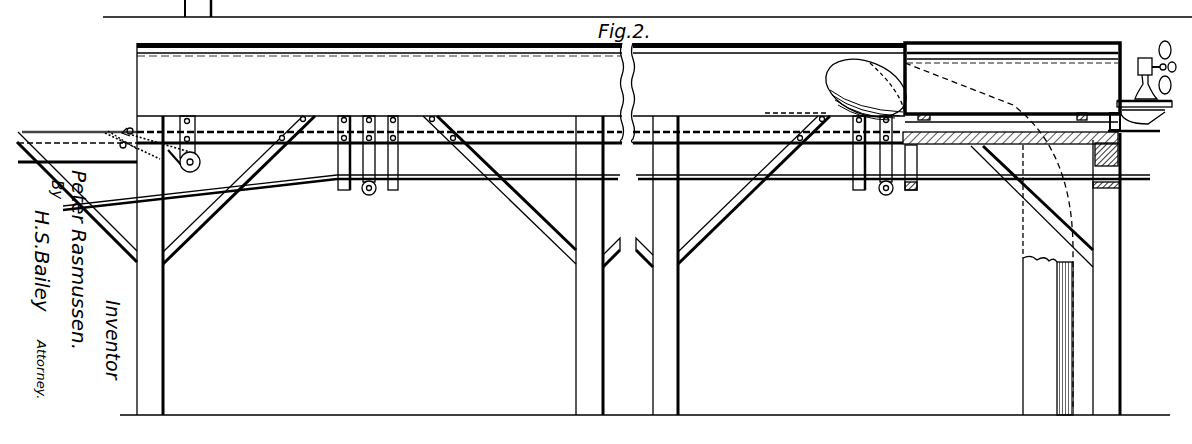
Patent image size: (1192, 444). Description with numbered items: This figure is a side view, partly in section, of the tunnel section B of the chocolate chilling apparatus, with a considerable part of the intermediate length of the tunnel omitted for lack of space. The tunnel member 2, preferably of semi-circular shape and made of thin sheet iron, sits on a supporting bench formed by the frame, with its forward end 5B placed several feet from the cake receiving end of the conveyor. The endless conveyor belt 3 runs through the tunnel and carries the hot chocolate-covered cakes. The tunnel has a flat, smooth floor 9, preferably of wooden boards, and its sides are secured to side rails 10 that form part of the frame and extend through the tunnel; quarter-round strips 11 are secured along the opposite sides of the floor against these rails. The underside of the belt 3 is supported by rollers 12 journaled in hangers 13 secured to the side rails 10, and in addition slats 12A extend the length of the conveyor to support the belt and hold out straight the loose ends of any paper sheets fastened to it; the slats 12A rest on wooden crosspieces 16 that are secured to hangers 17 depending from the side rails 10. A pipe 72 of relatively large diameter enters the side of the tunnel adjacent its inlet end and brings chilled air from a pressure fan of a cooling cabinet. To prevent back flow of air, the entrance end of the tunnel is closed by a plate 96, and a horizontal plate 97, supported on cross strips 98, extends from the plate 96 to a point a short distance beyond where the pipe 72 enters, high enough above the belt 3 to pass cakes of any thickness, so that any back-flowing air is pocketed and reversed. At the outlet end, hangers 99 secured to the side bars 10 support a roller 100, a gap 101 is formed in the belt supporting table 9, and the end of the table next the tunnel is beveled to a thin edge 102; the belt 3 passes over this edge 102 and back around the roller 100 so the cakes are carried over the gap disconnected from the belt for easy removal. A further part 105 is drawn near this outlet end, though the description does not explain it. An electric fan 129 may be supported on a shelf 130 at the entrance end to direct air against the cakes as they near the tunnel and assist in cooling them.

The tunnel member 2 is at (521, 93).
The endless conveyor belt 3 is at (45, 132).
The forward end of the chilling tunnel 5B is at (1118, 44).
The floor 9 is at (968, 145).
The side rails 10 is at (490, 126).
The quarter-round strips 11 is at (1122, 158).
The rollers 12 is at (367, 196).
The slats 12A is at (240, 200).
The hangers 13 is at (378, 120).
The crosspieces of wood 16 is at (398, 191).
The hangers 17 is at (338, 157).
The pipe 72 is at (845, 76).
The plate 96 is at (1116, 87).
The horizontal plate 97 is at (1003, 112).
The cross strips 98 is at (925, 113).
The hangers 99 is at (191, 122).
The roller 100 is at (201, 161).
The gap 101 is at (119, 148).
The beveled thin edge 102 is at (132, 127).
The chain 105 is at (128, 150).
The electric fan 129 is at (1158, 62).
The shelf 130 is at (1136, 113).
The tunnel section B is at (627, 158).